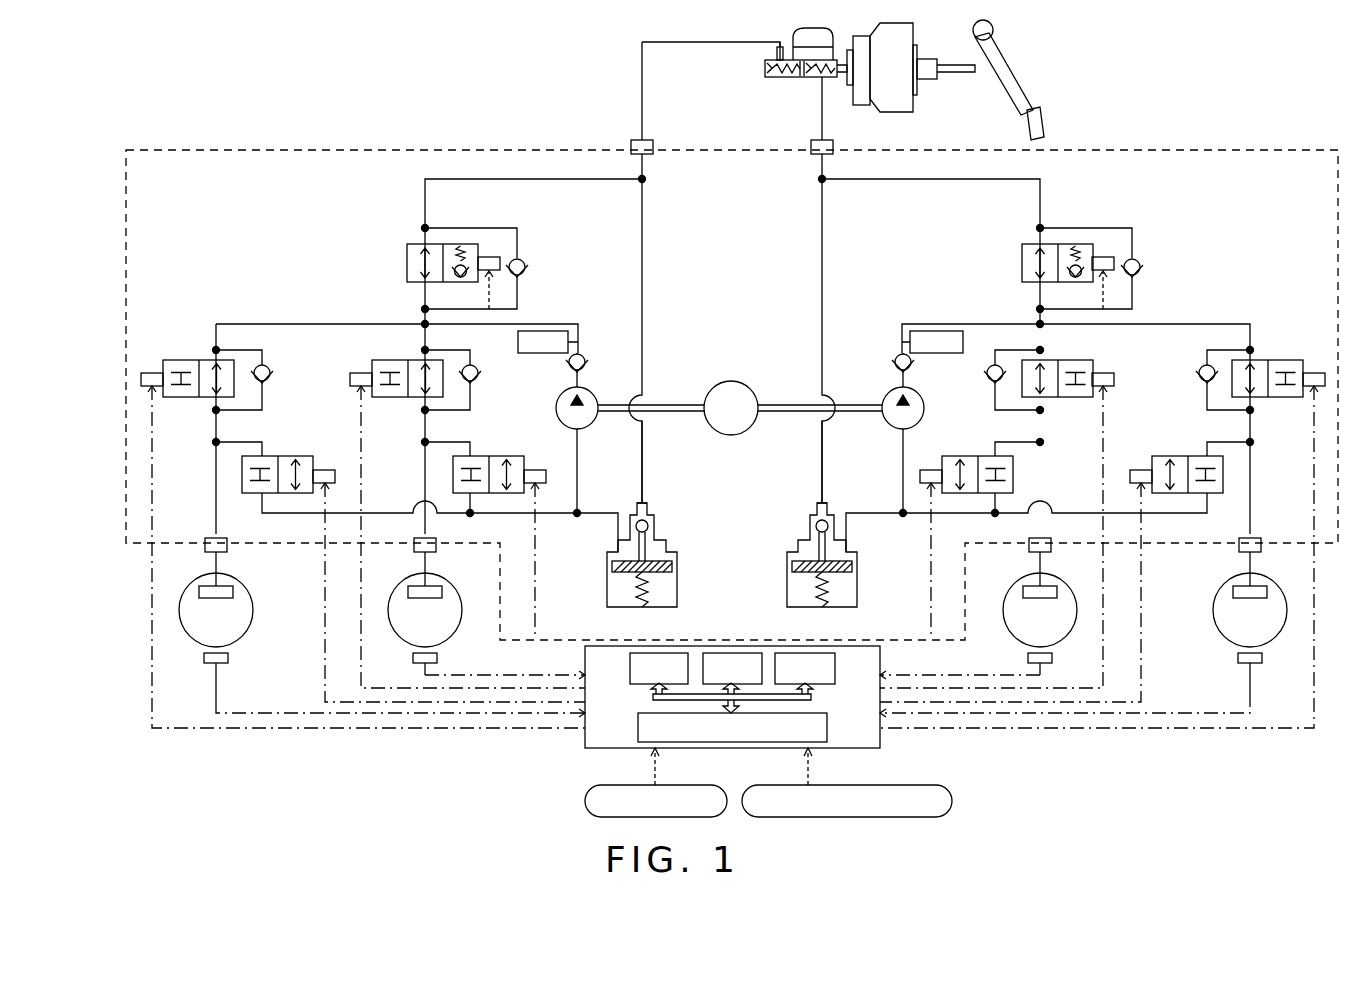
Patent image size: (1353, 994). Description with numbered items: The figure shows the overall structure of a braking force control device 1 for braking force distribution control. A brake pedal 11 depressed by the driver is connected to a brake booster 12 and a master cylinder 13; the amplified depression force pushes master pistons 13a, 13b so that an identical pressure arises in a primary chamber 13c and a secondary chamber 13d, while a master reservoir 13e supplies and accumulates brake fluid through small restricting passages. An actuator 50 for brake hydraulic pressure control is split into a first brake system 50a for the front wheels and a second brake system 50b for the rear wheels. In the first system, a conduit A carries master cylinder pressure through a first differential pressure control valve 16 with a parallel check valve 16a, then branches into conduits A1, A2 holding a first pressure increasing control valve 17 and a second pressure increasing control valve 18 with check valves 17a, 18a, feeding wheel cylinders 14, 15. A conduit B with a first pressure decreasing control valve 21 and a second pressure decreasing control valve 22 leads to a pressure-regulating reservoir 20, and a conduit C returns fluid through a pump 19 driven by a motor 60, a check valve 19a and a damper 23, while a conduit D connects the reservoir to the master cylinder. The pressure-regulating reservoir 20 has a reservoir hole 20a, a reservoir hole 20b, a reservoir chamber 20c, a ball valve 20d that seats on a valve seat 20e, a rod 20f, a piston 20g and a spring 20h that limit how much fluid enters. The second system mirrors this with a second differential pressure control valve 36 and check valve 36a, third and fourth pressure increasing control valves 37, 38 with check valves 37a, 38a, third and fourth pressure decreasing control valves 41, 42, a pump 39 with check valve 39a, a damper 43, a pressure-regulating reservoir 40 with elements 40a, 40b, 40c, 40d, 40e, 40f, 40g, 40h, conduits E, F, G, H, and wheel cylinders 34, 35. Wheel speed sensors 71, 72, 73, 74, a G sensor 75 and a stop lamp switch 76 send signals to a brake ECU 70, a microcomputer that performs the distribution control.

The braking force control device 1 is at (1112, 45).
The brake pedal 11 is at (990, 52).
The brake booster 12 is at (912, 30).
The master cylinder 13 is at (762, 68).
The master piston 13a is at (805, 78).
The master piston 13b is at (845, 78).
The primary chamber 13c is at (780, 78).
The secondary chamber 13d is at (828, 78).
The master reservoir 13e is at (812, 30).
The wheel cylinder 14 is at (200, 590).
The wheel cylinder 15 is at (410, 590).
The first differential pressure control valve 16 is at (406, 263).
The check valve 16a is at (512, 258).
The first pressure increasing control valve 17 is at (205, 360).
The check valve 17a is at (271, 367).
The second pressure increasing control valve 18 is at (410, 358).
The check valve 18a is at (479, 376).
The pump 19 is at (556, 406).
The check valve 19a is at (584, 354).
The pressure-regulating reservoir 20 is at (601, 586).
The reservoir hole 20a is at (645, 500).
The reservoir hole 20b is at (616, 540).
The reservoir chamber 20c is at (612, 553).
The ball valve 20d is at (651, 506).
The valve seat 20e is at (656, 528).
The rod 20f is at (655, 551).
The piston 20g is at (672, 566).
The spring 20h is at (650, 605).
The first pressure decreasing control valve 21 is at (265, 456).
The second pressure decreasing control valve 22 is at (480, 456).
The damper 23 is at (560, 352).
The wheel cylinder 34 is at (1268, 590).
The wheel cylinder 35 is at (1058, 590).
The second differential pressure control valve 36 is at (1021, 263).
The check valve 36a is at (1128, 258).
The third pressure increasing control valve 37 is at (1270, 360).
The check valve 37a is at (1198, 367).
The fourth pressure increasing control valve 38 is at (1060, 360).
The check valve 38a is at (986, 376).
The pump 39 is at (925, 406).
The check valve 39a is at (894, 348).
The pressure-regulating reservoir 40 is at (863, 586).
The reservoir hole 40a is at (820, 500).
The reservoir hole 40b is at (848, 540).
The reservoir chamber 40c is at (852, 553).
The ball valve 40d is at (813, 506).
The valve seat 40e is at (808, 528).
The rod 40f is at (809, 551).
The piston 40g is at (792, 566).
The spring 40h is at (816, 605).
The third pressure decreasing control valve 41 is at (1200, 456).
The fourth pressure decreasing control valve 42 is at (985, 456).
The damper 43 is at (920, 331).
The actuator for brake hydraulic pressure control 50 is at (458, 148).
The first brake system 50a is at (296, 282).
The second brake system 50b is at (1194, 282).
The motor 60 is at (722, 381).
The brake ECU 70 is at (882, 656).
The wheel speed sensor 71 is at (228, 658).
The wheel speed sensor 72 is at (438, 658).
The wheel speed sensor 73 is at (1028, 658).
The wheel speed sensor 74 is at (1238, 658).
The G sensor 75 is at (590, 788).
The stop lamp switch 76 is at (908, 785).
The conduit A is at (450, 182).
The conduit A1 is at (215, 503).
The conduit A2 is at (423, 495).
The conduit B is at (488, 514).
The conduit C is at (540, 331).
The conduit D is at (644, 255).
The conduit E is at (1012, 182).
The conduit F is at (978, 514).
The conduit G is at (938, 331).
The conduit H is at (820, 255).